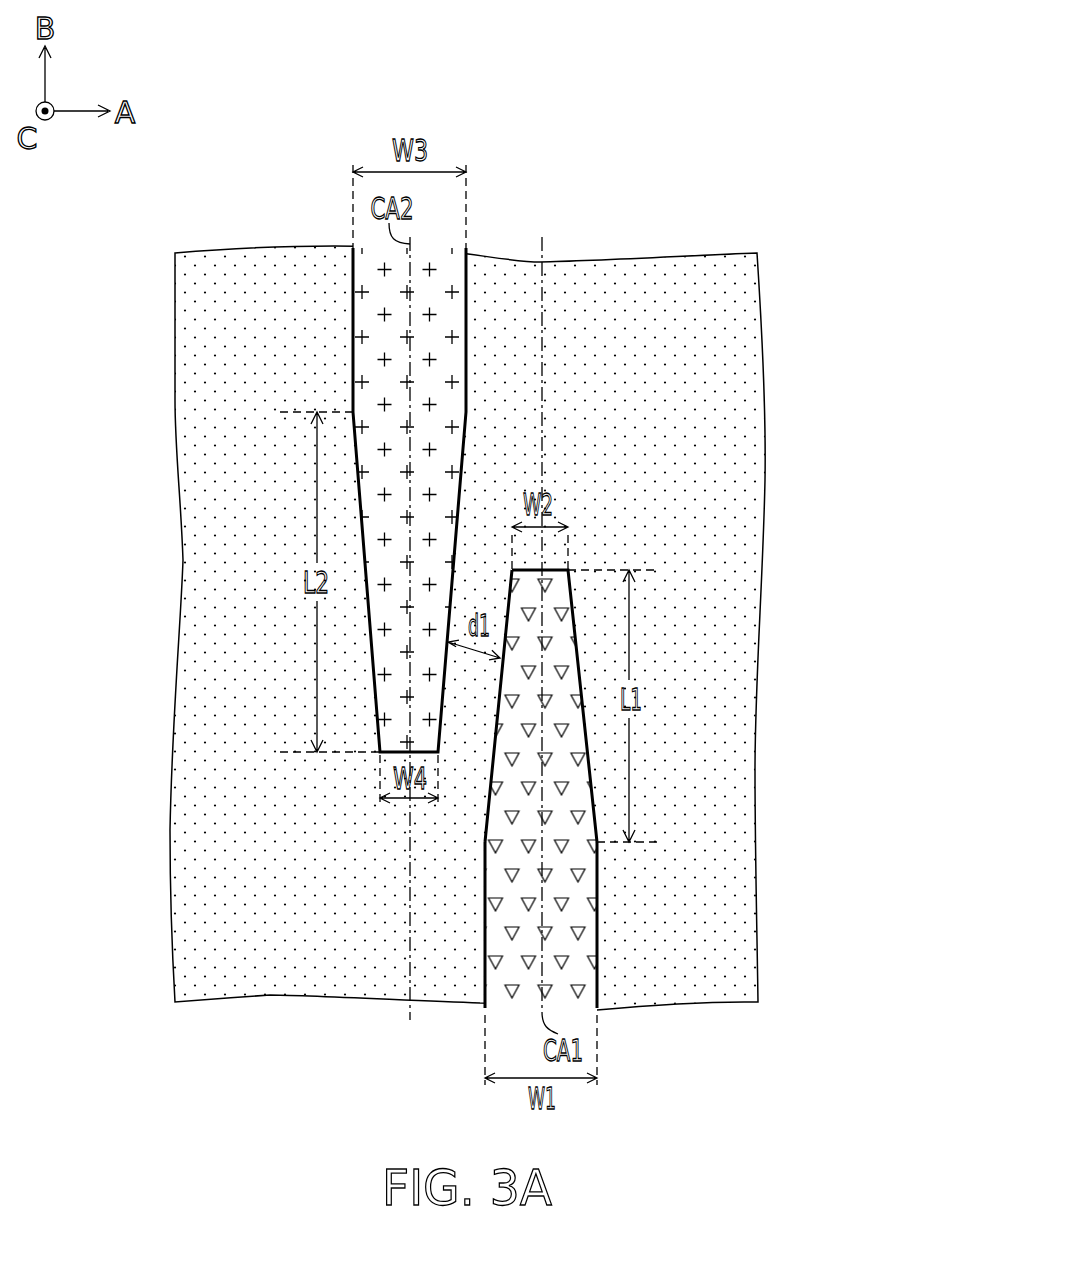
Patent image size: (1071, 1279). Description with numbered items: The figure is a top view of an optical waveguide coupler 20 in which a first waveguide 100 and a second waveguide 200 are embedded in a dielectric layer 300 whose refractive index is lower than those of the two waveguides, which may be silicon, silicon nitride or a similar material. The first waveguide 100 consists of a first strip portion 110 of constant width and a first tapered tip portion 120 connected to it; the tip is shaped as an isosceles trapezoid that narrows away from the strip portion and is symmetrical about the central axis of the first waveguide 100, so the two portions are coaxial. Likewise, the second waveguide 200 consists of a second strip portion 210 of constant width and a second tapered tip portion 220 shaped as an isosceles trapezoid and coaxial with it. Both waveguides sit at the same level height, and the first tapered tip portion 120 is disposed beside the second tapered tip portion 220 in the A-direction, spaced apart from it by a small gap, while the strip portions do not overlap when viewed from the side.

The optical waveguide coupler 20 is at (741, 240).
The dielectric layer 300 is at (743, 940).
The first waveguide 100 is at (625, 516).
The first strip portion 110 is at (660, 842).
The first tapered tip portion 120 is at (660, 570).
The second waveguide 200 is at (573, 389).
The second strip portion 210 is at (282, 248).
The second tapered tip portion 220 is at (275, 412).